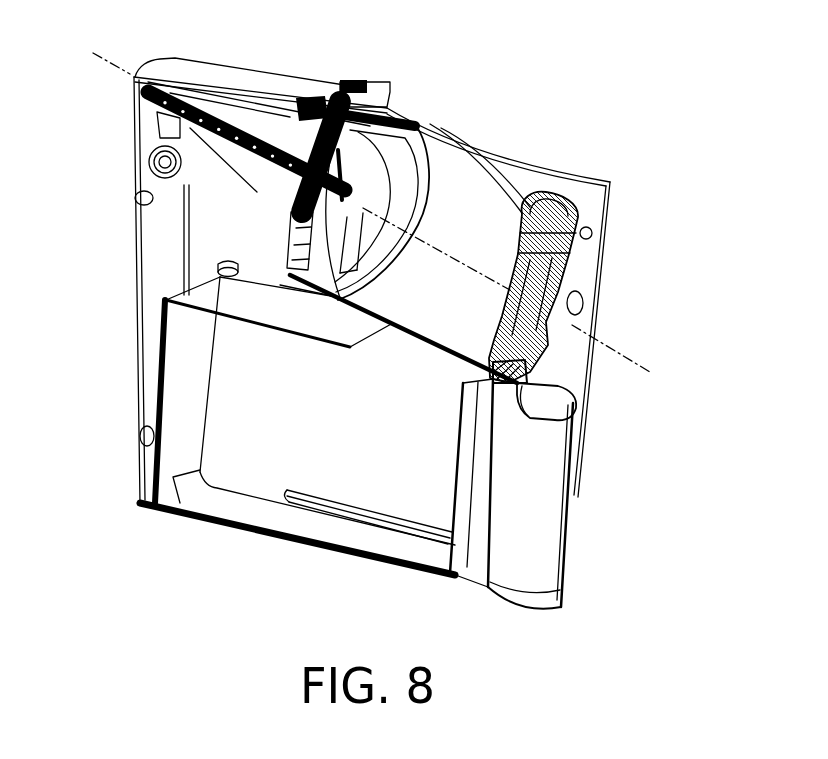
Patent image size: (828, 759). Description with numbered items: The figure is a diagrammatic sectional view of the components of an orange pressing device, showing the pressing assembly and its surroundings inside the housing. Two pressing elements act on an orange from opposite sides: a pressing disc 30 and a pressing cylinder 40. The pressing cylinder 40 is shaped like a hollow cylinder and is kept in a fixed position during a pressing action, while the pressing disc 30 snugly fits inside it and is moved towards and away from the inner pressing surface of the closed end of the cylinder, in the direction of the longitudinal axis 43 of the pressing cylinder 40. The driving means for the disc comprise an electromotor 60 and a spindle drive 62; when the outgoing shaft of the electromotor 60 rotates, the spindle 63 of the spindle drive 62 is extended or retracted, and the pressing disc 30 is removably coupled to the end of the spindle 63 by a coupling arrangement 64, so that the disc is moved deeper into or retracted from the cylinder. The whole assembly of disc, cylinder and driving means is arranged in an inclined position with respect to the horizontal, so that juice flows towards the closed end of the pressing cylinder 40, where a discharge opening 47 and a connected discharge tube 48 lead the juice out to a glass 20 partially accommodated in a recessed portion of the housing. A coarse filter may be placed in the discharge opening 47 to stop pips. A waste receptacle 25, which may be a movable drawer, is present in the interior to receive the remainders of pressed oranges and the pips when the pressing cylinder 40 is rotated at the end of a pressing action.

The glass 20 is at (550, 514).
The waste receptacle 25 is at (368, 484).
The pressing disc 30 is at (397, 147).
The pressing cylinder 40 is at (550, 268).
The longitudinal axis 43 is at (638, 365).
The discharge opening 47 is at (515, 376).
The discharge tube 48 is at (530, 414).
The electromotor 60 is at (163, 121).
The spindle drive 62 is at (296, 141).
The spindle 63 is at (252, 153).
The coupling arrangement 64 is at (341, 196).